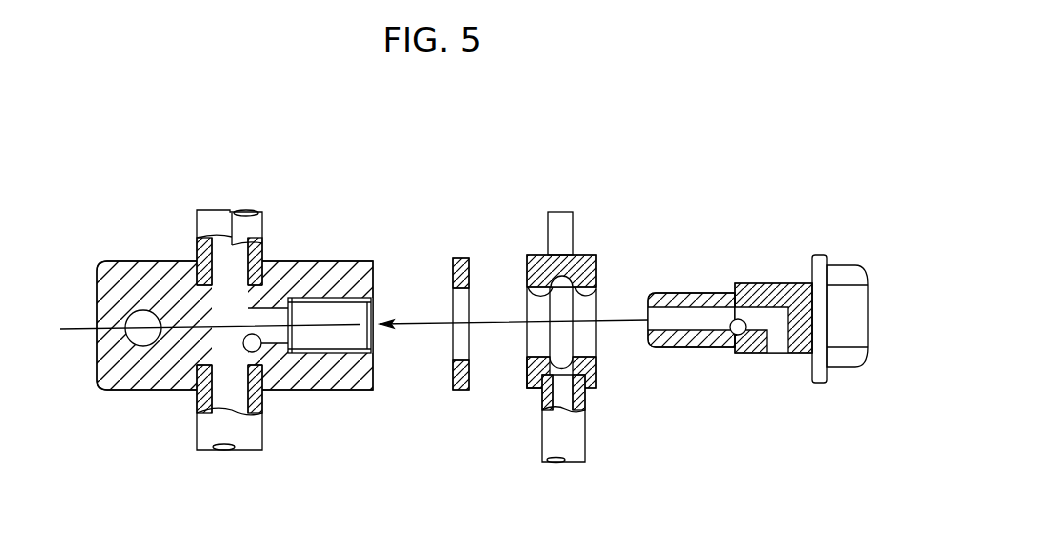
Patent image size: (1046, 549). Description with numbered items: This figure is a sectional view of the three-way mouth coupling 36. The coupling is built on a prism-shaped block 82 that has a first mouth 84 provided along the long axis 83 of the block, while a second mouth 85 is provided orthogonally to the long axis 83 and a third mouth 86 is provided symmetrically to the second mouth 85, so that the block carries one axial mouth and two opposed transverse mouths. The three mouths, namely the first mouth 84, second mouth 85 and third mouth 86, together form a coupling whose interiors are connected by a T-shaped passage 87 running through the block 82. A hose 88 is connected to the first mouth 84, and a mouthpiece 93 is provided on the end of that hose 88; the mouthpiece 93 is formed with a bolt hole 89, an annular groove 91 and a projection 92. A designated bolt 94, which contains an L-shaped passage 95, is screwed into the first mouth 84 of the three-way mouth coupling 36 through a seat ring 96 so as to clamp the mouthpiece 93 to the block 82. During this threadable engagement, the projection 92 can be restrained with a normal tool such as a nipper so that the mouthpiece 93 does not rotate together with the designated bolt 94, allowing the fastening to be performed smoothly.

The three-way mouth coupling 36 is at (130, 231).
The prism-shaped block 82 is at (322, 260).
The long axis 83 is at (73, 331).
The first mouth 84 is at (373, 343).
The second mouth 85 is at (232, 210).
The third mouth 86 is at (232, 448).
The T-shaped passage 87 is at (260, 345).
The hose 88 is at (587, 437).
The bolt hole 89 is at (598, 295).
The annular groove 91 is at (528, 302).
The projection 92 is at (573, 227).
The mouthpiece 93 is at (531, 391).
The designated bolt 94 is at (843, 266).
The L-shaped passage 95 is at (743, 353).
The seat ring 96 is at (453, 258).